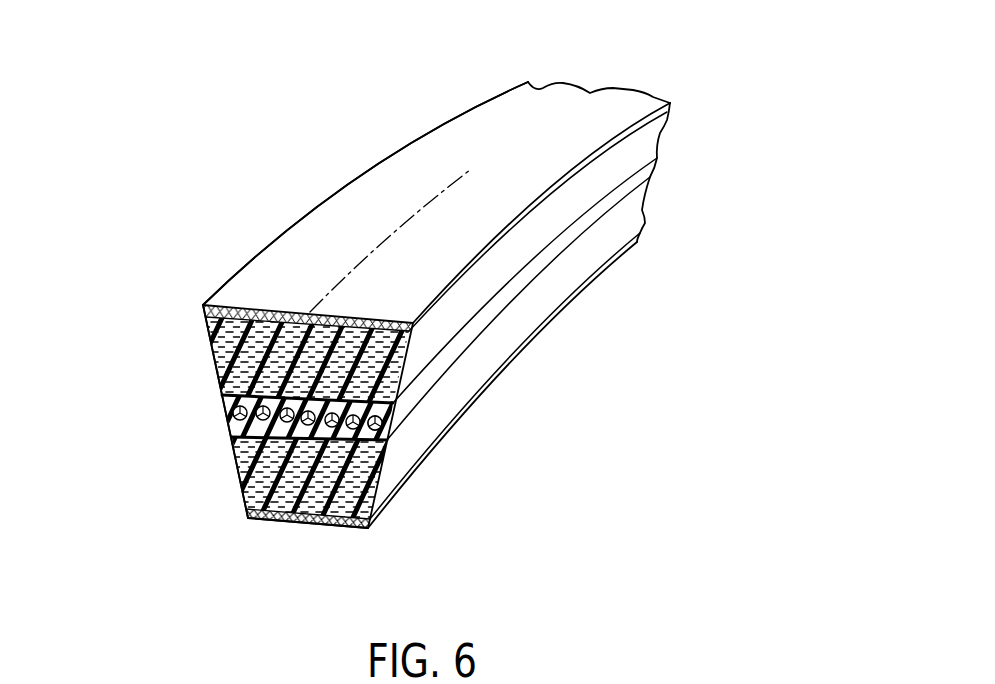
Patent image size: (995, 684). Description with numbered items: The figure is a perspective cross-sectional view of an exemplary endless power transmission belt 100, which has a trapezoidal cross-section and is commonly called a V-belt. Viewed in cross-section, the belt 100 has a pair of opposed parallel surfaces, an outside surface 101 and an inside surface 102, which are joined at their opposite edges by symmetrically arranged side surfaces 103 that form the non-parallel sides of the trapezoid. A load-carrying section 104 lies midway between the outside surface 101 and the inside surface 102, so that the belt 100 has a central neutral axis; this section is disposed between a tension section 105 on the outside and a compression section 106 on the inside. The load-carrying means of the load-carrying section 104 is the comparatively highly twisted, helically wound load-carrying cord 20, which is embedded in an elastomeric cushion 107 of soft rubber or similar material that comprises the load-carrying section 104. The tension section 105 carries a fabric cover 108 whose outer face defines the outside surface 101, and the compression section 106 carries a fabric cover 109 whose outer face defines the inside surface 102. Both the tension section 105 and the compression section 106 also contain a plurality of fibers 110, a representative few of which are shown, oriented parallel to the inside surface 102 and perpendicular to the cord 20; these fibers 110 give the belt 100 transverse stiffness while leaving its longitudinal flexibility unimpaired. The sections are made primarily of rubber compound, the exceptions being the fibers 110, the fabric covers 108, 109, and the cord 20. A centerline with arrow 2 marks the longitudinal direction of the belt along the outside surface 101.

The endless power transmission belt 100 is at (698, 95).
The outside surface 101 is at (280, 262).
The inside surface 102 is at (295, 522).
The side surfaces 103 is at (237, 448).
The load-carrying section 104 is at (224, 407).
The tension section 105 is at (210, 338).
The compression section 106 is at (241, 478).
The elastomeric cushion 107 is at (383, 437).
The fabric cover 108 is at (245, 308).
The fabric cover 109 is at (330, 527).
The fibers 110 is at (250, 517).
The load-carrying cord 20 is at (377, 412).
The longitudinal direction 2 is at (443, 162).